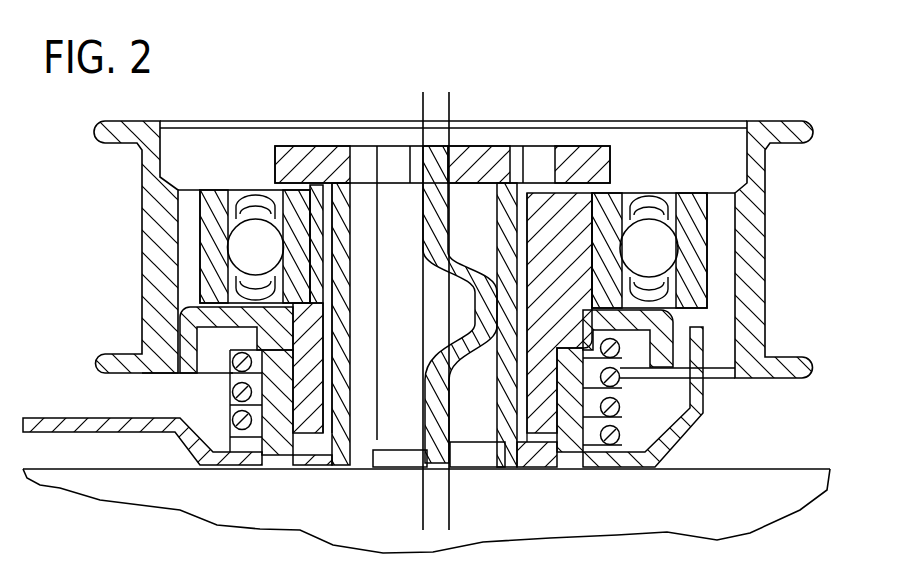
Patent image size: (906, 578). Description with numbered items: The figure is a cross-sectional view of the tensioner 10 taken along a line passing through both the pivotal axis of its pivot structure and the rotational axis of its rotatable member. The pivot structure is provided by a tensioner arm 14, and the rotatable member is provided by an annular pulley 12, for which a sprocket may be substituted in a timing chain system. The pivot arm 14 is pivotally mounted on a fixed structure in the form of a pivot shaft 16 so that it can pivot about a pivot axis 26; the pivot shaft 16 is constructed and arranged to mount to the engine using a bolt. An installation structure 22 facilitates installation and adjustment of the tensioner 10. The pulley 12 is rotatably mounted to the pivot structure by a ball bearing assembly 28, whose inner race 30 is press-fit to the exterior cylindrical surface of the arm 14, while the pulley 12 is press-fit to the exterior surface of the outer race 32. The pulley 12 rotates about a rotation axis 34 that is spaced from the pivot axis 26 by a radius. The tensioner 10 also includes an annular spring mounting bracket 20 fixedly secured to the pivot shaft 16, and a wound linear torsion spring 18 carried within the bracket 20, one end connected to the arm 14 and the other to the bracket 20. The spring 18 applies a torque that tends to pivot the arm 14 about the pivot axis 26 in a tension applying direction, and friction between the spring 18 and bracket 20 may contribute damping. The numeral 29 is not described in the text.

The tensioner 10 is at (653, 96).
The pulley 12 is at (767, 214).
The tensioner arm 14 is at (585, 195).
The pivot shaft 16 is at (355, 303).
The torsion spring 18 is at (232, 393).
The spring mounting bracket 20 is at (688, 423).
The installation structure 22 is at (315, 152).
The pivot axis 26 is at (421, 108).
The ball bearing assembly 28 is at (701, 174).
The sleeve 29 is at (328, 237).
The inner race 30 is at (297, 216).
The outer race 32 is at (213, 268).
The rotation axis 34 is at (451, 102).